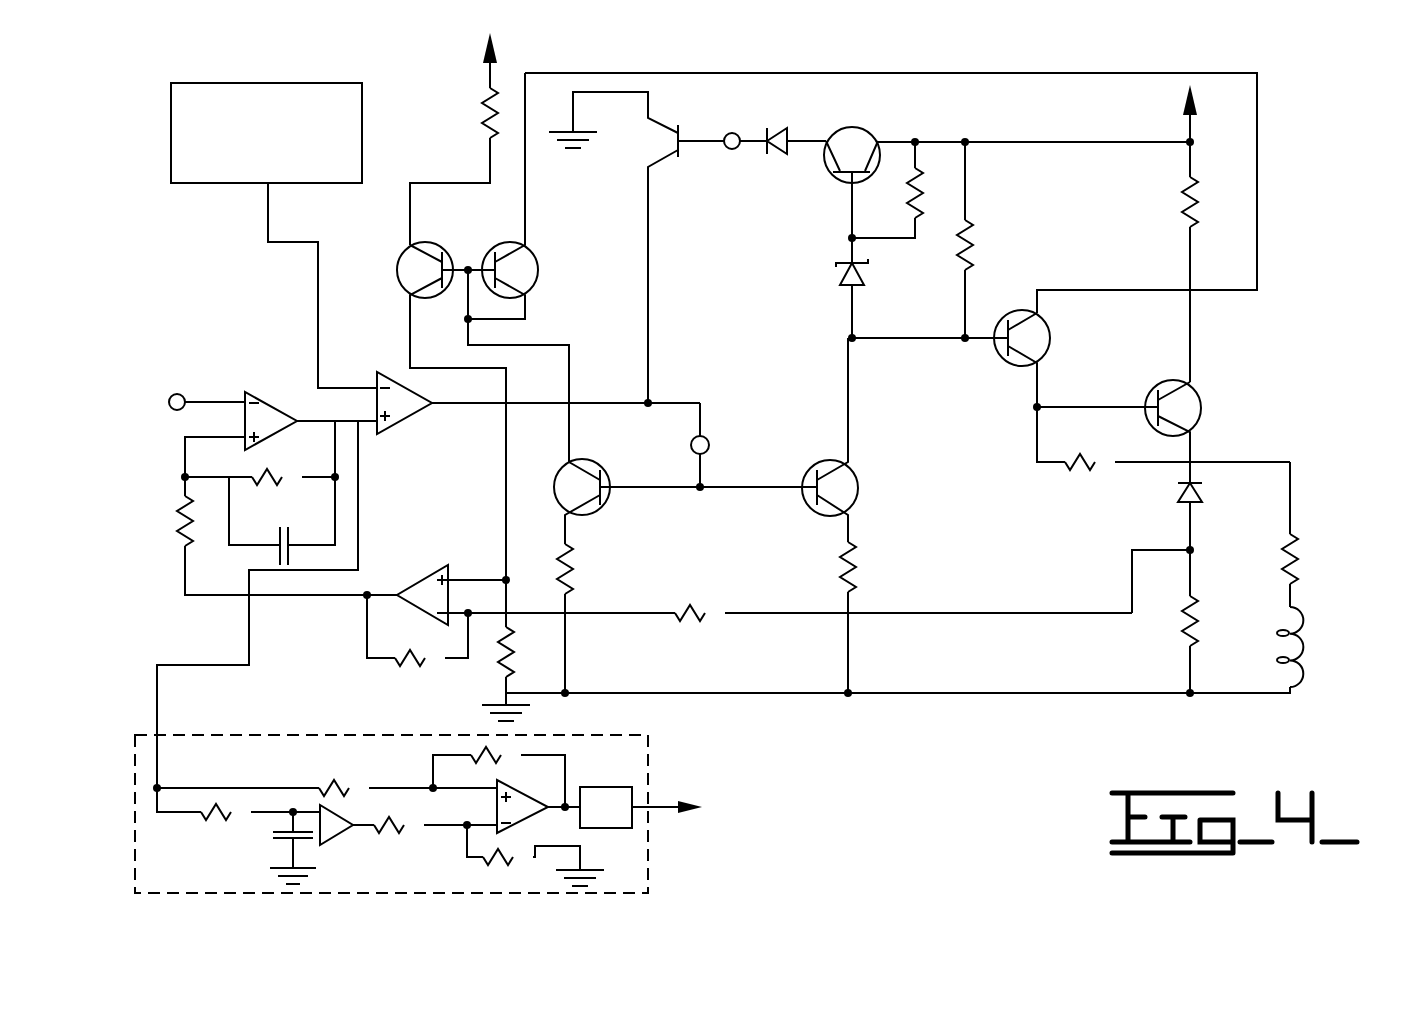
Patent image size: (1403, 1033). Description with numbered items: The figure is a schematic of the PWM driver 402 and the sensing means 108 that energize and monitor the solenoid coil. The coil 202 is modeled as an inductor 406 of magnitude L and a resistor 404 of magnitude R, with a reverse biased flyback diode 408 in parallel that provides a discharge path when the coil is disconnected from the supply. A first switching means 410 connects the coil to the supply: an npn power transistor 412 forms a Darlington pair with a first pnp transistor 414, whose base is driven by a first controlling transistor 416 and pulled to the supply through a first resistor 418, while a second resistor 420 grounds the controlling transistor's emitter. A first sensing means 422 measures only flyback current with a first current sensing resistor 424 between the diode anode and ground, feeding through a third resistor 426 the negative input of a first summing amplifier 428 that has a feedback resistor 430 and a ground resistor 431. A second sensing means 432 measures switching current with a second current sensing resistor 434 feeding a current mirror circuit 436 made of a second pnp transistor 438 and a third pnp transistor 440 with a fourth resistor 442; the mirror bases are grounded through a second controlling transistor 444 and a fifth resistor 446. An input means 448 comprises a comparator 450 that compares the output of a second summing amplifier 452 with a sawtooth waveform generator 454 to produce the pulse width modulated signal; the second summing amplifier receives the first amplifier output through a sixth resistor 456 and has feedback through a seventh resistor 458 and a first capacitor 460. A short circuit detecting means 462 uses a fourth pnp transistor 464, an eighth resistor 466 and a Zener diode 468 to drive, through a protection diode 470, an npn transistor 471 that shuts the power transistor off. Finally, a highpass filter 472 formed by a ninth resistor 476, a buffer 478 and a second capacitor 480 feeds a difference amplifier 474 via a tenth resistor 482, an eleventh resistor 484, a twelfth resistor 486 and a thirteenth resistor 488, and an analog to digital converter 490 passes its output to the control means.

The sensing means 108 is at (132, 755).
The coil 202 is at (1252, 440).
The PWM driver 402 is at (838, 782).
The resistor 404 is at (1305, 548).
The inductor 406 is at (1305, 640).
The flyback diode 408 is at (1180, 473).
The first switching means 410 is at (1250, 330).
The npn power transistor 412 is at (1170, 378).
The first pnp transistor 414 is at (1055, 332).
The first controlling transistor 416 is at (865, 483).
The first resistor 418 is at (985, 228).
The second resistor 420 is at (850, 548).
The first sensing means 422 is at (1130, 634).
The first current sensing resistor 424 is at (1180, 620).
The third resistor 426 is at (720, 613).
The first summing amplifier 428 is at (440, 570).
The feedback resistor 430 is at (410, 665).
The ground resistor 431 is at (500, 675).
The second sensing means 432 is at (1087, 118).
The second current sensing resistor 434 is at (1185, 195).
The current mirror circuit 436 is at (440, 100).
The second pnp transistor 438 is at (538, 268).
The third pnp transistor 440 is at (397, 268).
The fourth resistor 442 is at (482, 110).
The second controlling transistor 444 is at (631, 444).
The fifth resistor 446 is at (585, 595).
The input means 448 is at (140, 340).
The comparator 450 is at (405, 425).
The second summing amplifier 452 is at (285, 440).
The sawtooth waveform generator 454 is at (171, 118).
The sixth resistor 456 is at (175, 515).
The seventh resistor 458 is at (252, 480).
The first capacitor 460 is at (300, 548).
The short circuit detecting means 462 is at (836, 108).
The fourth pnp transistor 464 is at (830, 160).
The eighth resistor 466 is at (913, 212).
The Zener diode 468 is at (850, 255).
The protection diode 470 is at (800, 100).
The npn transistor 471 is at (636, 249).
The highpass filter 472 is at (245, 831).
The difference amplifier 474 is at (520, 818).
The ninth resistor 476 is at (190, 812).
The buffer 478 is at (340, 830).
The second capacitor 480 is at (290, 848).
The tenth resistor 482 is at (372, 825).
The eleventh resistor 484 is at (522, 862).
The twelfth resistor 486 is at (318, 788).
The thirteenth resistor 488 is at (470, 755).
The analog to digital converter 490 is at (583, 787).